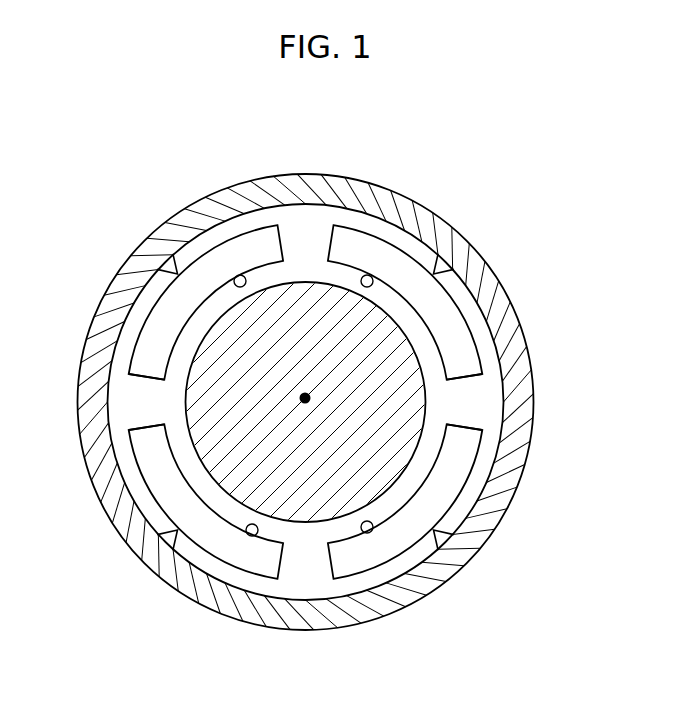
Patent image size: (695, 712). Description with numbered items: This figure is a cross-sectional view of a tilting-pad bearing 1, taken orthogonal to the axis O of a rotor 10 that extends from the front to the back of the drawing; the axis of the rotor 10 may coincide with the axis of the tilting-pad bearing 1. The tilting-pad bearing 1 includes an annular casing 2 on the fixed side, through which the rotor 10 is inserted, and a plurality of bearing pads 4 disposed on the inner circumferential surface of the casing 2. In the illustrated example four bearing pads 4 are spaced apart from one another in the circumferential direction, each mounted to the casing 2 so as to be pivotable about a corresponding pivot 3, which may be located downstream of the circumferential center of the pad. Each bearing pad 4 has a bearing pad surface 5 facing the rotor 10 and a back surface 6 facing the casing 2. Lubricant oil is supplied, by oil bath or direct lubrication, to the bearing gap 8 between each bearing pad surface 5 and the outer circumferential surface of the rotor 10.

The tilting-pad bearing 1 is at (548, 271).
The casing 2 is at (530, 360).
The pivot 3 is at (158, 259).
The bearing pad 4 is at (258, 240).
The bearing pad surface 5 is at (237, 277).
The back surface 6 is at (176, 250).
The bearing gap 8 is at (133, 318).
The rotor 10 is at (400, 405).